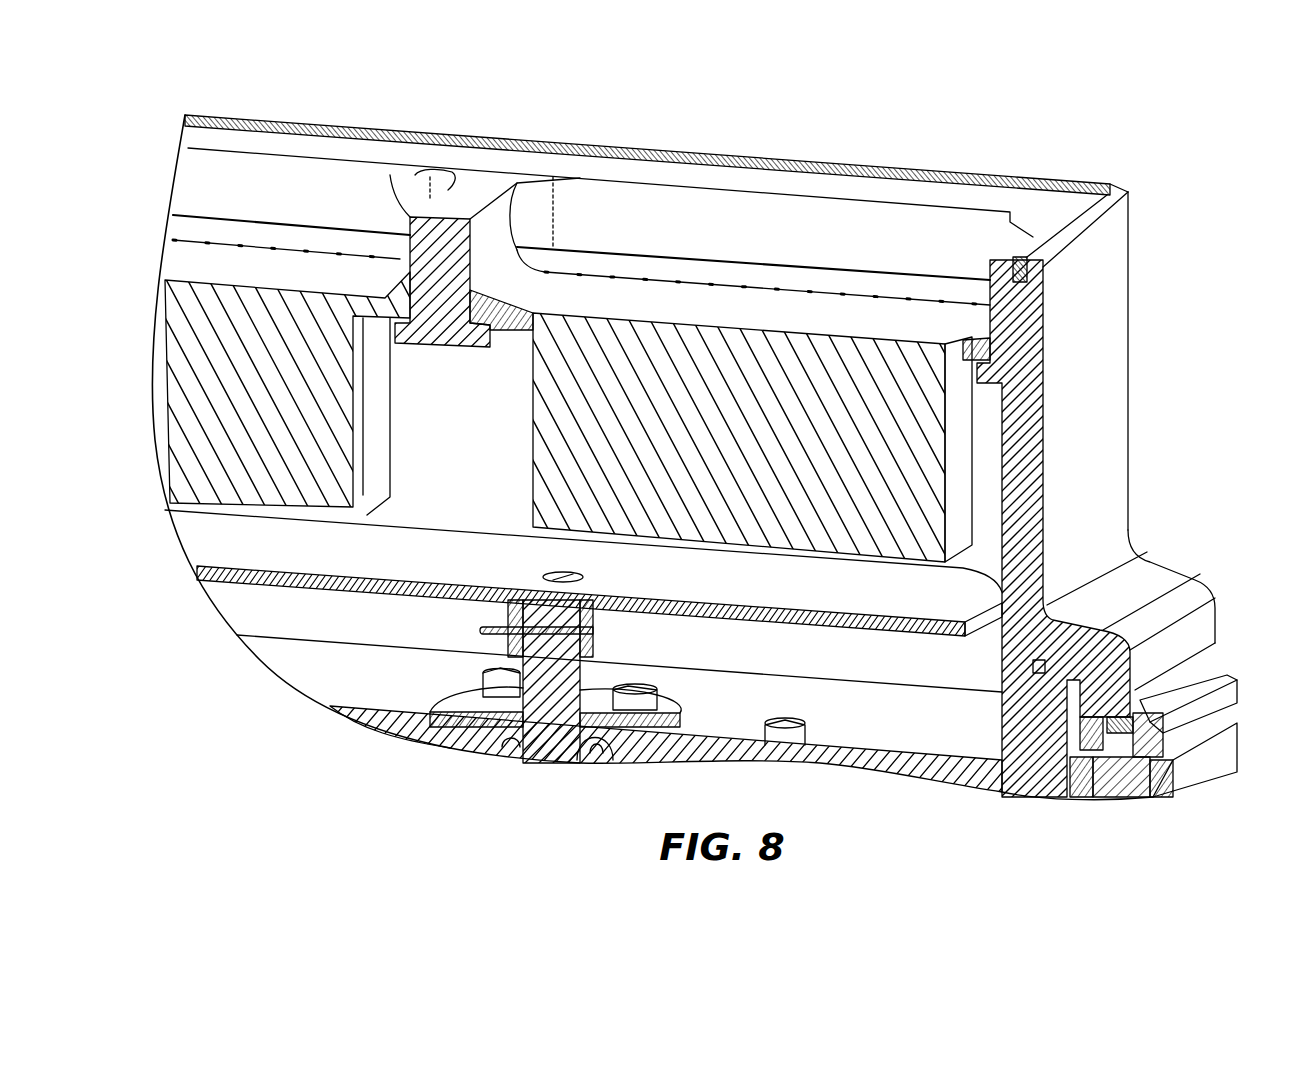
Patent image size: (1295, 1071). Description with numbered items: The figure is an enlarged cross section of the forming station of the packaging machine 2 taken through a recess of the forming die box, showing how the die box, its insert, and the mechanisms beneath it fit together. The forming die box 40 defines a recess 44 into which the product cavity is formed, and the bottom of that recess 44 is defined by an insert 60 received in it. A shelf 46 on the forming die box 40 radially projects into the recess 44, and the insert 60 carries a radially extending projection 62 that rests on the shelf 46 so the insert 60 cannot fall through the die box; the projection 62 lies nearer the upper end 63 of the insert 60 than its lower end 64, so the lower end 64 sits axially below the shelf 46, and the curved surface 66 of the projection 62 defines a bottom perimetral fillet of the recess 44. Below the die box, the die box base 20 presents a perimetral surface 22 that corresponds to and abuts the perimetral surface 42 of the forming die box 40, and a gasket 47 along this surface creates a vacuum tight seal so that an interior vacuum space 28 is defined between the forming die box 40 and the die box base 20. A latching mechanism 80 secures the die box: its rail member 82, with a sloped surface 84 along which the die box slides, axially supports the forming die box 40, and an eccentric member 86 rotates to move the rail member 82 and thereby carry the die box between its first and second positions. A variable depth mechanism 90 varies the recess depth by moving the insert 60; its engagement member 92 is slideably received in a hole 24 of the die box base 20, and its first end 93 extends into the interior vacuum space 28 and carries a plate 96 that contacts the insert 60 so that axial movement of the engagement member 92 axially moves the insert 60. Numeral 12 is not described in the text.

The packaging machine 2 is at (982, 74).
The conveyor assembly 12 is at (1143, 110).
The die box base 20 is at (978, 785).
The perimetral surface 22 is at (1002, 656).
The hole 24 is at (545, 762).
The interior vacuum space 28 is at (447, 225).
The forming die box 40 is at (1095, 280).
The perimetral surface 42 is at (1133, 577).
The recess 44 is at (353, 220).
The shelf 46 is at (1000, 415).
The gasket 47 is at (1100, 522).
The insert 60 is at (740, 372).
The projection 62 is at (447, 378).
The upper end 63 is at (303, 202).
The lower end 64 is at (225, 521).
The curved surface 66 is at (248, 235).
The latching mechanism 80 is at (1250, 704).
The rail member 82 is at (1180, 733).
The sloped surface 84 is at (1207, 682).
The eccentric member 86 is at (1120, 783).
The variable depth mechanism 90 is at (358, 746).
The engagement member 92 is at (480, 740).
The first end 93 is at (456, 626).
The plate 96 is at (395, 560).